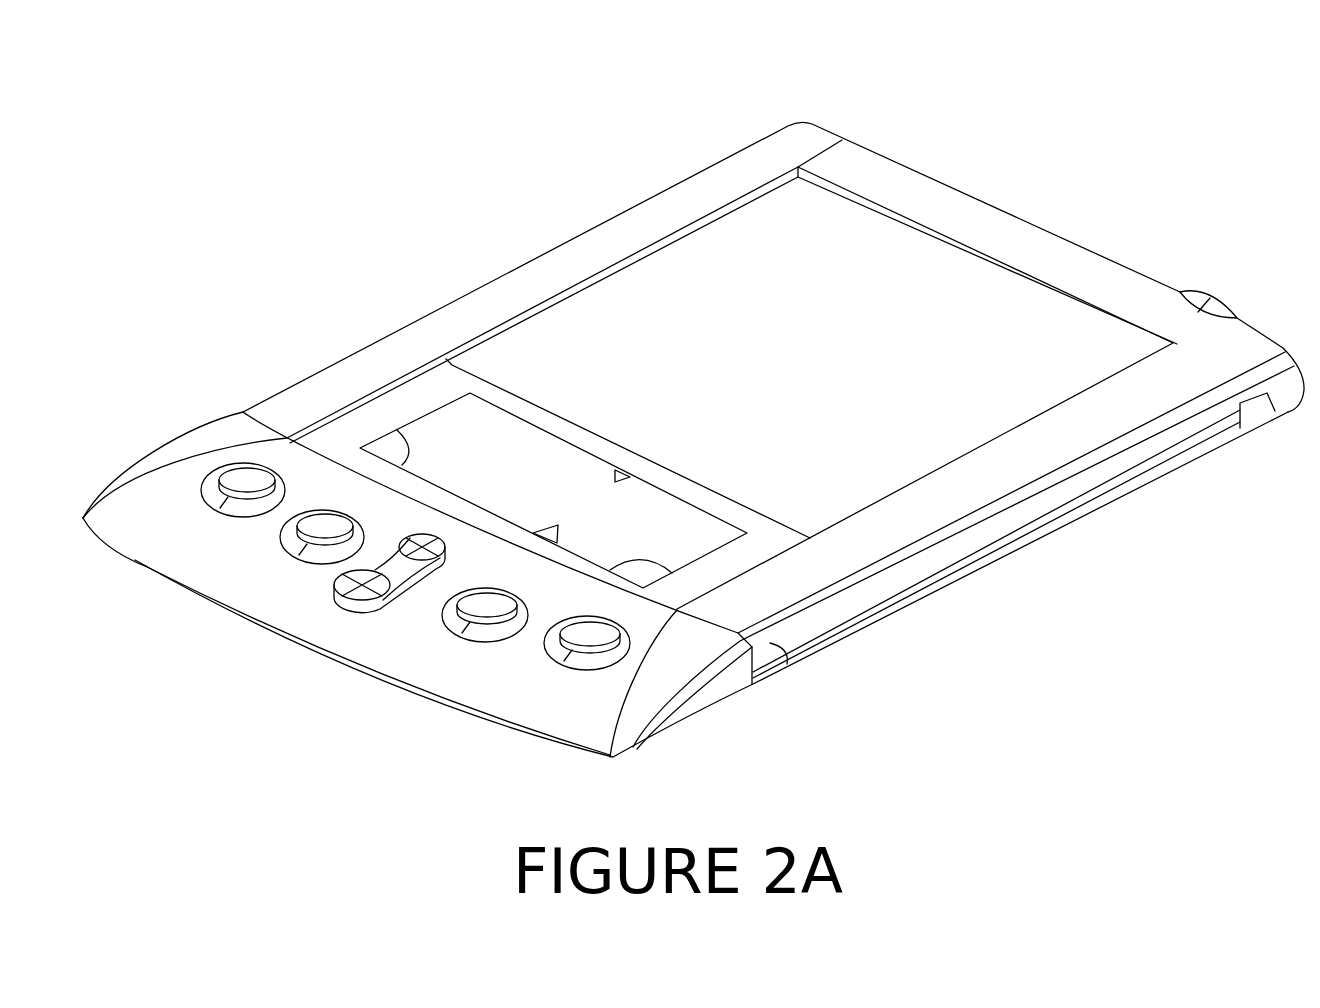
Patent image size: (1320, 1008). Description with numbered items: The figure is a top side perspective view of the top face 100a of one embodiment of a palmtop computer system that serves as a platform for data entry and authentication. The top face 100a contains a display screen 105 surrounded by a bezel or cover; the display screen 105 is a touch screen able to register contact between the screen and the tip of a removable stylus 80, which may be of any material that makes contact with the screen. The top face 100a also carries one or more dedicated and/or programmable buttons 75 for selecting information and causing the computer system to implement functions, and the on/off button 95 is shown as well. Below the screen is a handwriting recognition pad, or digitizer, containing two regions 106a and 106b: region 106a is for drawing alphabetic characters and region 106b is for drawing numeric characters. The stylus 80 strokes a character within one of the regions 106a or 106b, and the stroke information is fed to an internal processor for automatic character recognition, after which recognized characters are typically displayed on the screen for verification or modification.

The top face 100a is at (178, 75).
The buttons 75 is at (248, 468).
The stylus 80 is at (1000, 543).
The on/off button 95 is at (1203, 293).
The display screen 105 is at (800, 285).
The region 106a is at (508, 475).
The region 106b is at (670, 547).